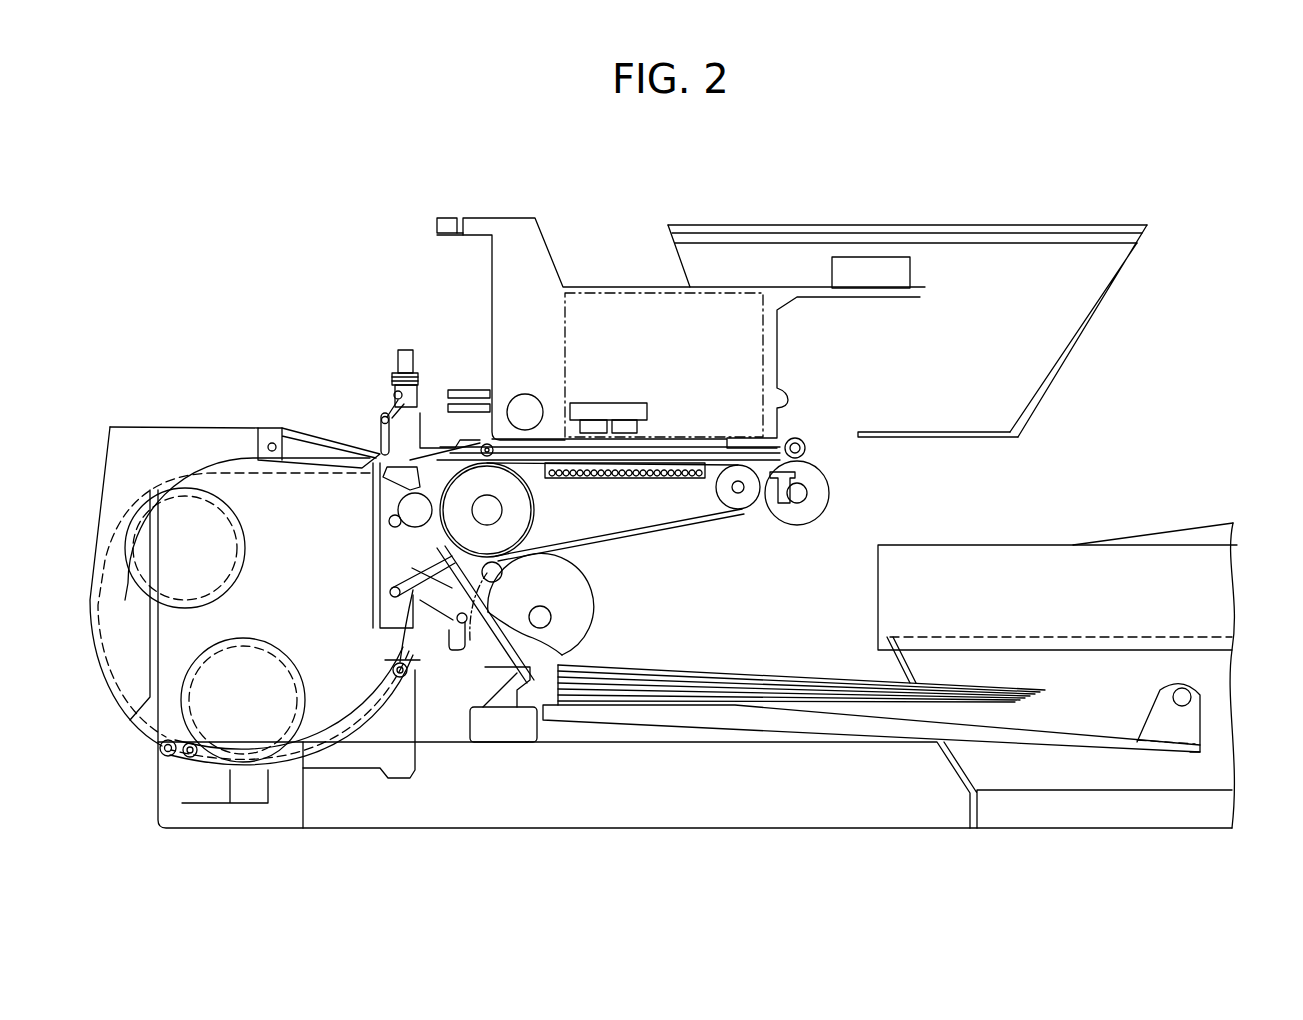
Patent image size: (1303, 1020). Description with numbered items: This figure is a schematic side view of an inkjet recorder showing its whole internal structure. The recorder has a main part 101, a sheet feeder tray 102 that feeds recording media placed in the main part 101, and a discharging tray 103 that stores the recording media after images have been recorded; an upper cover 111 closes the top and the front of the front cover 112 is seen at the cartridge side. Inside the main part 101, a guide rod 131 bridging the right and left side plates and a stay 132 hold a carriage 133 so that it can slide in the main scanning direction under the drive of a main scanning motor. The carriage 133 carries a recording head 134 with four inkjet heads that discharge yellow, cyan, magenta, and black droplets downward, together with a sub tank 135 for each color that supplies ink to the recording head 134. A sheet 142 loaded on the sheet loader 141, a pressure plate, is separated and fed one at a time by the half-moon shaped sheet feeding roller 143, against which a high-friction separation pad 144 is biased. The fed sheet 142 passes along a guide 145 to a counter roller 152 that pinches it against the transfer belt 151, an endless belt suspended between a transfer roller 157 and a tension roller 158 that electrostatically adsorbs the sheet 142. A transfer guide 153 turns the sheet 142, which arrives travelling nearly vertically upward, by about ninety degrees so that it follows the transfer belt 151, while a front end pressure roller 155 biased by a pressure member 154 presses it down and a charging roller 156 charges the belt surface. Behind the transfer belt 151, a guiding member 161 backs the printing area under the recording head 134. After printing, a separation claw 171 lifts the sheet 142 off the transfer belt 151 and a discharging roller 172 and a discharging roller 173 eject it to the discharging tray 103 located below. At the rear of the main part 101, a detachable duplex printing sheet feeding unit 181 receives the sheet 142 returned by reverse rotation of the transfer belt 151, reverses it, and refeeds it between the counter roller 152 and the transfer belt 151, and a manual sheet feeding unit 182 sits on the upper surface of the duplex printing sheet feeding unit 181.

The main part 101 is at (902, 183).
The sheet feeder tray 102 is at (1058, 829).
The discharging tray 103 is at (1133, 563).
The upper cover 111 is at (976, 230).
The front of the front cover 112 is at (1082, 340).
The guide rod 131 is at (522, 398).
The stay 132 is at (447, 222).
The carriage 133 is at (543, 256).
The recording head 134 is at (683, 447).
The sub tank 135 is at (630, 306).
The sheet loader 141 is at (645, 722).
The sheet 142 is at (733, 706).
The sheet feeding roller 143 is at (590, 618).
The separation pad 144 is at (498, 730).
The guide 145 is at (452, 634).
The transfer belt 151 is at (655, 530).
The counter roller 152 is at (403, 508).
The transfer guide 153 is at (392, 450).
The pressure member 154 is at (393, 402).
The front end pressure roller 155 is at (480, 443).
The charging roller 156 is at (502, 572).
The transfer roller 157 is at (530, 508).
The tension roller 158 is at (740, 505).
The guiding member 161 is at (610, 480).
The separation claw 171 is at (800, 526).
The discharging roller 172 is at (822, 493).
The discharging roller 173 is at (806, 448).
The duplex printing sheet feeding unit 181 is at (122, 466).
The manual sheet feeding unit 182 is at (262, 421).